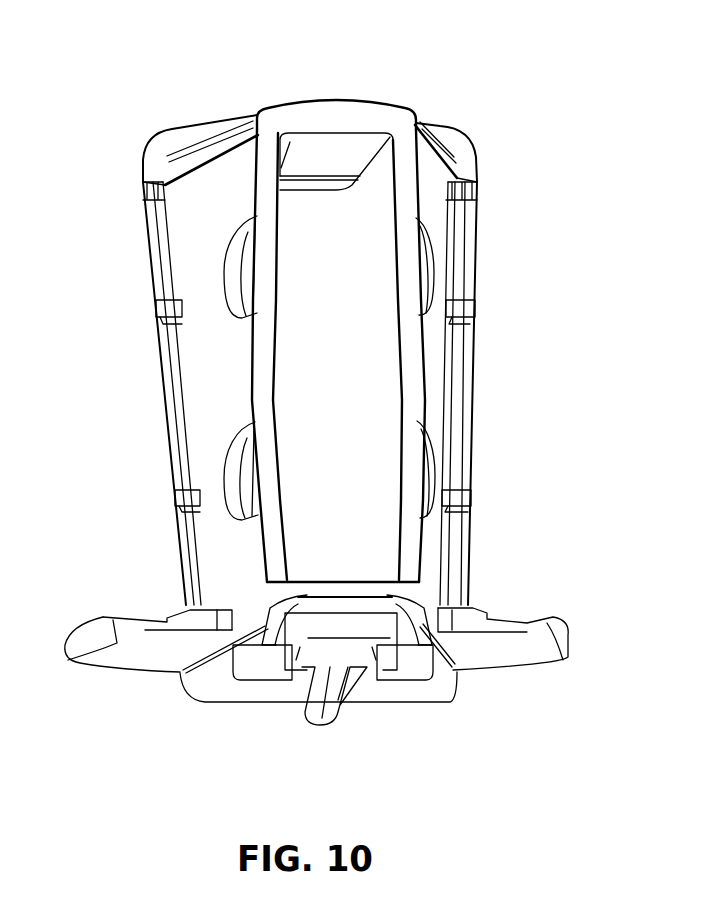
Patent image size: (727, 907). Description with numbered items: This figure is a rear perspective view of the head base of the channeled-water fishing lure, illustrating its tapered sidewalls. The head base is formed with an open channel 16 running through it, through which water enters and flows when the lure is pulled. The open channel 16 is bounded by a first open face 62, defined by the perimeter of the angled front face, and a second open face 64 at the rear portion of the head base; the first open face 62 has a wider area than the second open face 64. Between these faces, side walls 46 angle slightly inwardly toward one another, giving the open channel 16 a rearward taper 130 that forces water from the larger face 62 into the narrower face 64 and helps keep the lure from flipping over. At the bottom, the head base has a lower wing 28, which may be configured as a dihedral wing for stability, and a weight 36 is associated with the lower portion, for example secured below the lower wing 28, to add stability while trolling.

The open channel 16 is at (352, 373).
The lower wing 28 is at (462, 686).
The weight 36 is at (393, 697).
The side walls 46 is at (207, 388).
The first open face 62 is at (172, 127).
The second open face 64 is at (396, 311).
The rearward taper 130 is at (447, 160).